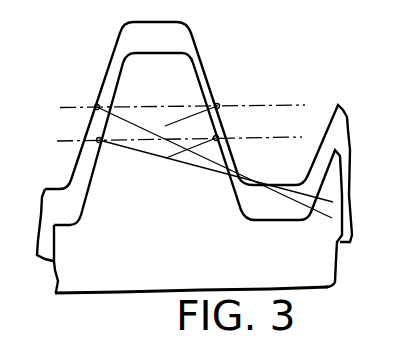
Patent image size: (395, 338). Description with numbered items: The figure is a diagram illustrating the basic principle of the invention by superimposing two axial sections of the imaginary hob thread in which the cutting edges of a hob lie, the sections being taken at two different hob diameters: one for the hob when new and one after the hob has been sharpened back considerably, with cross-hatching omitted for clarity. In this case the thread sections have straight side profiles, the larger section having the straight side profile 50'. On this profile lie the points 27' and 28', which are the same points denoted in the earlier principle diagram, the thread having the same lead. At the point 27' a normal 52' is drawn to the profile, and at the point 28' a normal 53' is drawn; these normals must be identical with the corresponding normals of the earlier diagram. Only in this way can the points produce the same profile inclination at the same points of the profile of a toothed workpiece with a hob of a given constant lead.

The straight side profile 50' is at (194, 141).
The point 27' is at (80, 93).
The point 28' is at (78, 130).
The normal 52' is at (214, 148).
The normal 53' is at (216, 171).